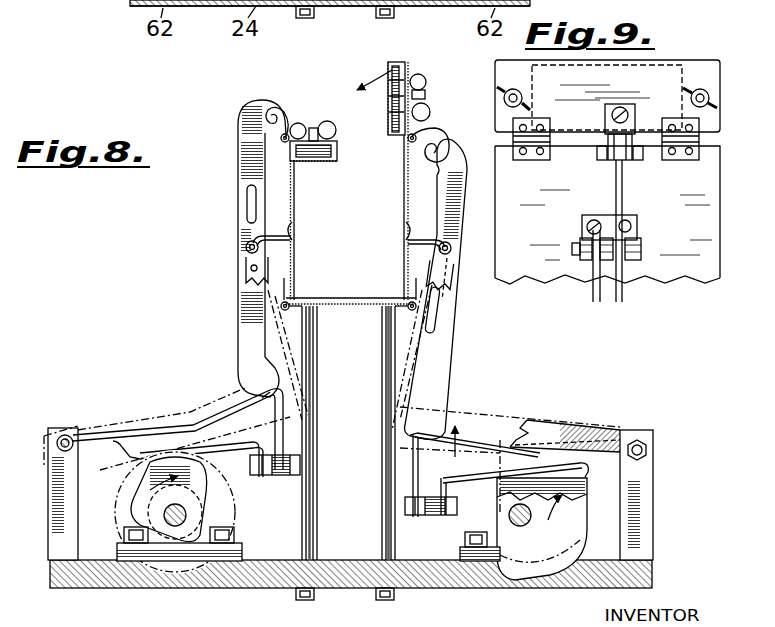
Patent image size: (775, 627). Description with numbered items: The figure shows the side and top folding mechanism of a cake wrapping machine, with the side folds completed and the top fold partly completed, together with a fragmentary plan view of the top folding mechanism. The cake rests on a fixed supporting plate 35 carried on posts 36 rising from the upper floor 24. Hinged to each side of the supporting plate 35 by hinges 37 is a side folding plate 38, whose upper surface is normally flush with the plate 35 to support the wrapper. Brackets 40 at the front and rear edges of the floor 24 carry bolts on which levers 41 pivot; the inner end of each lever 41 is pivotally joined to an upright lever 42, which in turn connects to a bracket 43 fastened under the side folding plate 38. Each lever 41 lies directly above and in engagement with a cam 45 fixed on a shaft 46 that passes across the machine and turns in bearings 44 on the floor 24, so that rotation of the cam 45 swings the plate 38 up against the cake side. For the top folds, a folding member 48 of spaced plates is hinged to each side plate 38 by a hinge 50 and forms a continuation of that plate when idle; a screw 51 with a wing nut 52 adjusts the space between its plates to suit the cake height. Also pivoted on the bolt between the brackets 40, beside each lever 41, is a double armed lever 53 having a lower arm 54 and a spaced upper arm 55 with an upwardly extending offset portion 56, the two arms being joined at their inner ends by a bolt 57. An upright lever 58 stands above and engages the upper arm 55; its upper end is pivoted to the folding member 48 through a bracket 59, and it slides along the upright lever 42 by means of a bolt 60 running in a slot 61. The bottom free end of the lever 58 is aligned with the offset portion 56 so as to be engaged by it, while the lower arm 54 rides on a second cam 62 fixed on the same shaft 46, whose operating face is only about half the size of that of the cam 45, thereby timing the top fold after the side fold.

In FIG. 8, the floor 24 is at (260, 575).
In FIG. 8, the fixed supporting plate 35 is at (336, 298).
In FIG. 8, the posts 36 is at (382, 353).
In FIG. 8, the hinges 37 is at (409, 309).
In FIG. 8, the side folding plate 38 is at (294, 210).
In FIG. 9, the side folding plate 38 is at (666, 276).
In FIG. 8, the brackets 40 is at (60, 497).
In FIG. 8, the lever 41 is at (540, 430).
In FIG. 8, the upright lever 42 is at (250, 270).
In FIG. 9, the upright lever 42 is at (594, 290).
In FIG. 8, the bracket 43 is at (255, 238).
In FIG. 9, the bracket 43 is at (588, 228).
In FIG. 8, the bearings 44 is at (180, 548).
In FIG. 8, the cam 45 is at (528, 572).
In FIG. 8, the shaft 46 is at (186, 514).
In FIG. 8, the folding member 48 is at (341, 150).
In FIG. 9, the folding member 48 is at (620, 104).
In FIG. 8, the hinge 50 is at (282, 140).
In FIG. 9, the hinge 50 is at (530, 160).
In FIG. 9, the screw 51 is at (514, 89).
In FIG. 8, the wing nut 52 is at (314, 124).
In FIG. 9, the wing nut 52 is at (700, 89).
In FIG. 8, the double armed lever 53 is at (388, 453).
In FIG. 8, the lower arm 54 is at (128, 445).
In FIG. 8, the upper arm 55 is at (165, 430).
In FIG. 8, the offset portion 56 is at (262, 396).
In FIG. 8, the bolt 57 is at (278, 476).
In FIG. 8, the upright lever 58 is at (248, 336).
In FIG. 9, the upright lever 58 is at (623, 198).
In FIG. 8, the bracket 59 is at (282, 112).
In FIG. 9, the bracket 59 is at (606, 160).
In FIG. 8, the bolt 60 is at (246, 247).
In FIG. 9, the bolt 60 is at (642, 246).
In FIG. 8, the slot 61 is at (248, 198).
In FIG. 8, the cam 62 is at (140, 490).